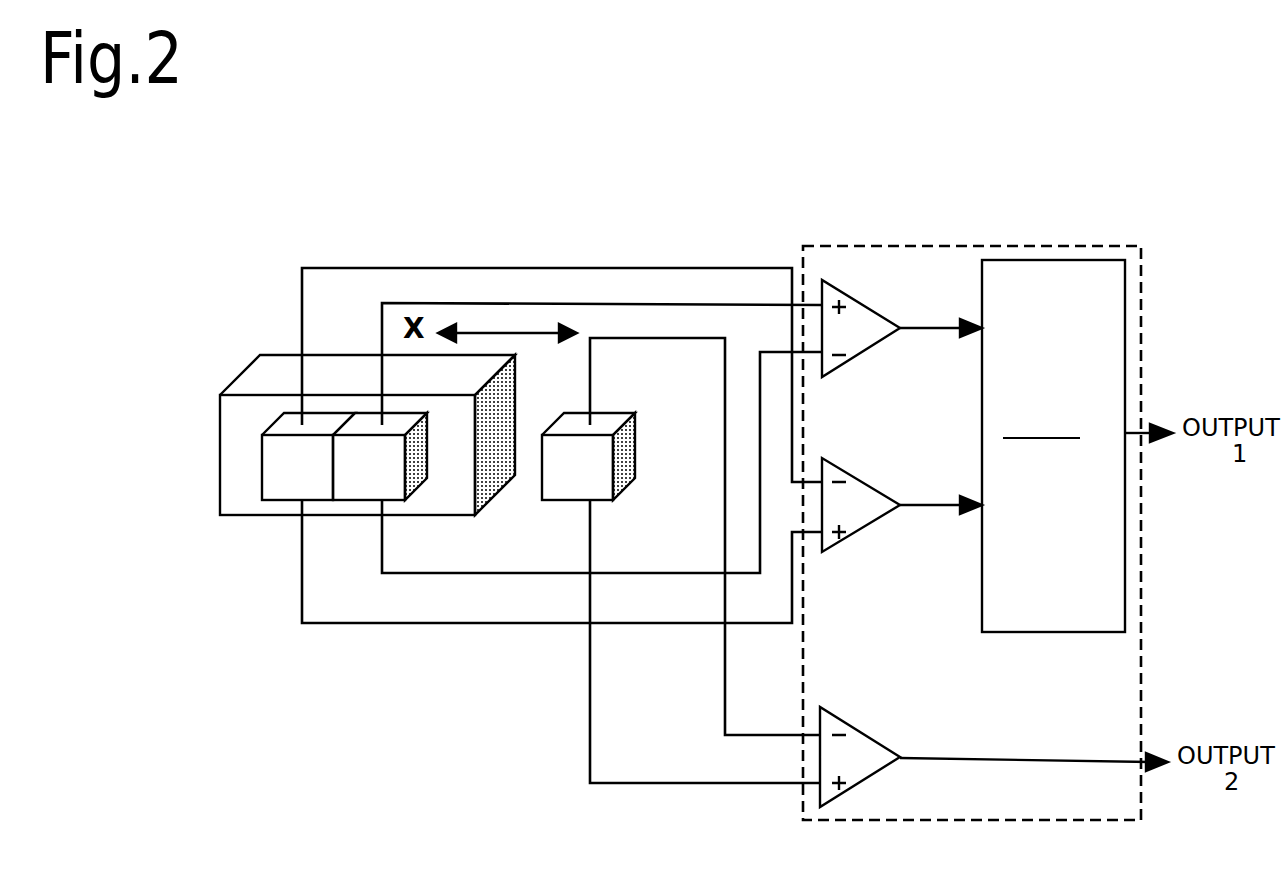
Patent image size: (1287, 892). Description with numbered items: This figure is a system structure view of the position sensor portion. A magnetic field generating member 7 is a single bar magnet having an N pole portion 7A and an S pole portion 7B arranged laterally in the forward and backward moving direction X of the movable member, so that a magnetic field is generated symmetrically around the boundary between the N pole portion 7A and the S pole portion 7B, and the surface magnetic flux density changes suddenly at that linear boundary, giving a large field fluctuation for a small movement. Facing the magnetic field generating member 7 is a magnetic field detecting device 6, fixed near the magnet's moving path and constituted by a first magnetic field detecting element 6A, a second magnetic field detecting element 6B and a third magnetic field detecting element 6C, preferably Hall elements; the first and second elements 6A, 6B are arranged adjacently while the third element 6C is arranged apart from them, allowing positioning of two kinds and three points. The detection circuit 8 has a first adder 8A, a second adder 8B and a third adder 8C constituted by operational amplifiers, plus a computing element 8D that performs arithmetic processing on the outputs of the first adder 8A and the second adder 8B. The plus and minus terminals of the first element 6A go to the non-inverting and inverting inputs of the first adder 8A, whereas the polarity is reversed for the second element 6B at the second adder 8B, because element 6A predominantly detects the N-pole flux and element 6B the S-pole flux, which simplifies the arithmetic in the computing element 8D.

The magnetic field detecting device 6 is at (357, 575).
The first magnetic field detecting element 6A is at (296, 484).
The second magnetic field detecting element 6B is at (365, 483).
The third magnetic field detecting element 6C is at (575, 488).
The magnetic field generating member 7 is at (298, 374).
The N pole portion 7A is at (282, 387).
The S pole portion 7B is at (372, 388).
The detection circuit 8 is at (988, 514).
The first adder 8A is at (852, 552).
The second adder 8B is at (853, 298).
The third adder 8C is at (850, 790).
The computing element 8D is at (1047, 268).